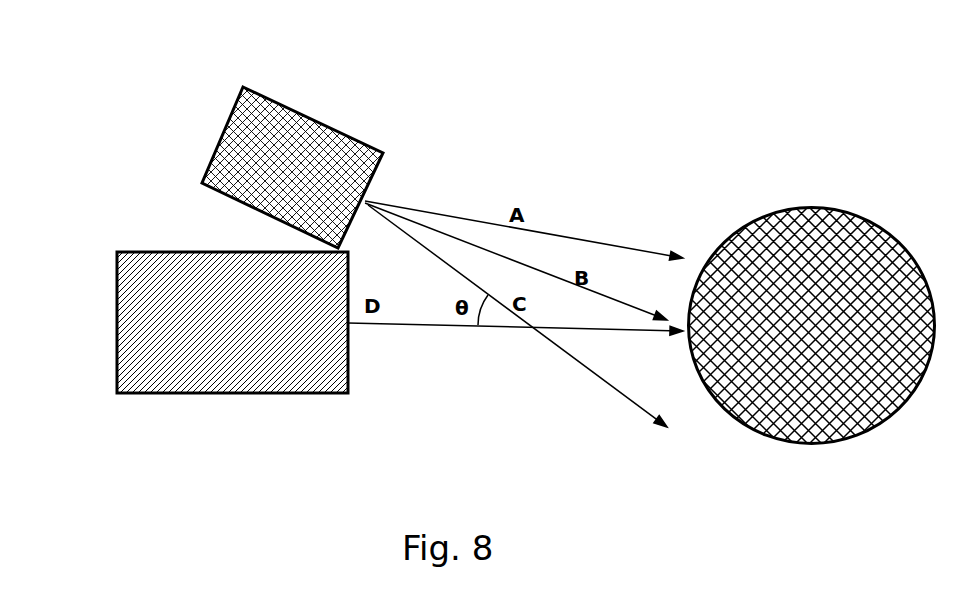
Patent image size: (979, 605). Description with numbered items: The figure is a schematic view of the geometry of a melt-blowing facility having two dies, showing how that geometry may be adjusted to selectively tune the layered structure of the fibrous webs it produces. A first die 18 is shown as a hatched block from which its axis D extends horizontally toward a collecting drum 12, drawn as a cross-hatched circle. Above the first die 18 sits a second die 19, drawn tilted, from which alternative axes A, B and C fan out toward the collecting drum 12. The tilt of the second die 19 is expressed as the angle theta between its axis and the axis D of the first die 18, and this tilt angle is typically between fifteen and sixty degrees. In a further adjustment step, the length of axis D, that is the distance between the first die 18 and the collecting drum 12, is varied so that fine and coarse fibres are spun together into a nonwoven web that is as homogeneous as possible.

The collecting drum 12 is at (875, 222).
The first die 18 is at (153, 272).
The second die 19 is at (247, 117).